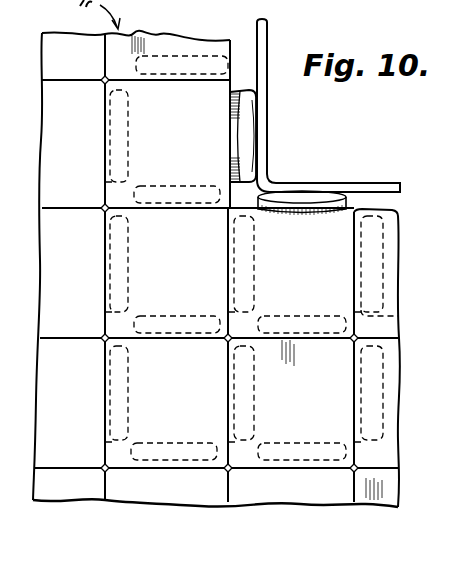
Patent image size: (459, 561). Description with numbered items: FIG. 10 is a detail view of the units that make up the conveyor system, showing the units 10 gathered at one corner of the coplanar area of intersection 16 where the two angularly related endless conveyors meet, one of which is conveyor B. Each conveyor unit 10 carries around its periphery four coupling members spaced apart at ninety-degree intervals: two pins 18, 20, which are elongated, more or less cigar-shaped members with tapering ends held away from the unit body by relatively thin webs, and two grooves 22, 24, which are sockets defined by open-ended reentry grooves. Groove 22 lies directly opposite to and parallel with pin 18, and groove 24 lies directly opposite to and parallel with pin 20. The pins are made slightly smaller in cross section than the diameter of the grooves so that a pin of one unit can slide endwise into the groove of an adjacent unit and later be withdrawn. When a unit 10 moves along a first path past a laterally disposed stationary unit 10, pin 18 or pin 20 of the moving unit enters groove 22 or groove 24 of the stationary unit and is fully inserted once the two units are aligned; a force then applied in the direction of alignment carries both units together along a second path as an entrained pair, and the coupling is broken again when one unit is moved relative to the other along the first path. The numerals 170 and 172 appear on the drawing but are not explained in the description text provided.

The conveyor unit 10 is at (390, 364).
The coplanar area of intersection 16 is at (88, 288).
The pin 18 is at (317, 192).
The pin 20 is at (247, 133).
The groove 22 is at (143, 460).
The groove 24 is at (400, 433).
The L-shaped bracket 170 is at (458, 152).
The edge panel 172 is at (393, 292).
The endless conveyor B is at (363, 508).